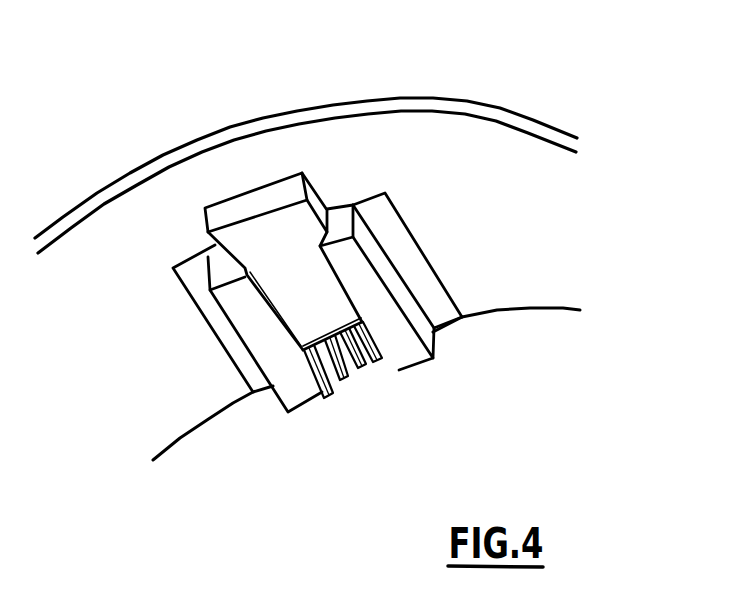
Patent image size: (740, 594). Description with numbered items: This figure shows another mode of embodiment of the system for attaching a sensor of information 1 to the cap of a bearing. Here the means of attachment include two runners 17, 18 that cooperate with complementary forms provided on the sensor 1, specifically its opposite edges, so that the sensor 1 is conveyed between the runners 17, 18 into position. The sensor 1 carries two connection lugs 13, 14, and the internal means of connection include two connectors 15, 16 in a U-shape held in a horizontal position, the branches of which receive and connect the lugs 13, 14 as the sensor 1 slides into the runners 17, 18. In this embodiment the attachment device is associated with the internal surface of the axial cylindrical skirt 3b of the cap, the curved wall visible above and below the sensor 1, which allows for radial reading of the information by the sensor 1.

The sensor of information 1 is at (263, 197).
The axial cylindrical skirt 3b is at (497, 153).
The lug 13 is at (325, 396).
The lug 14 is at (380, 356).
The connector 15 is at (341, 377).
The connector 16 is at (372, 360).
The runner 17 is at (286, 397).
The runner 18 is at (408, 355).